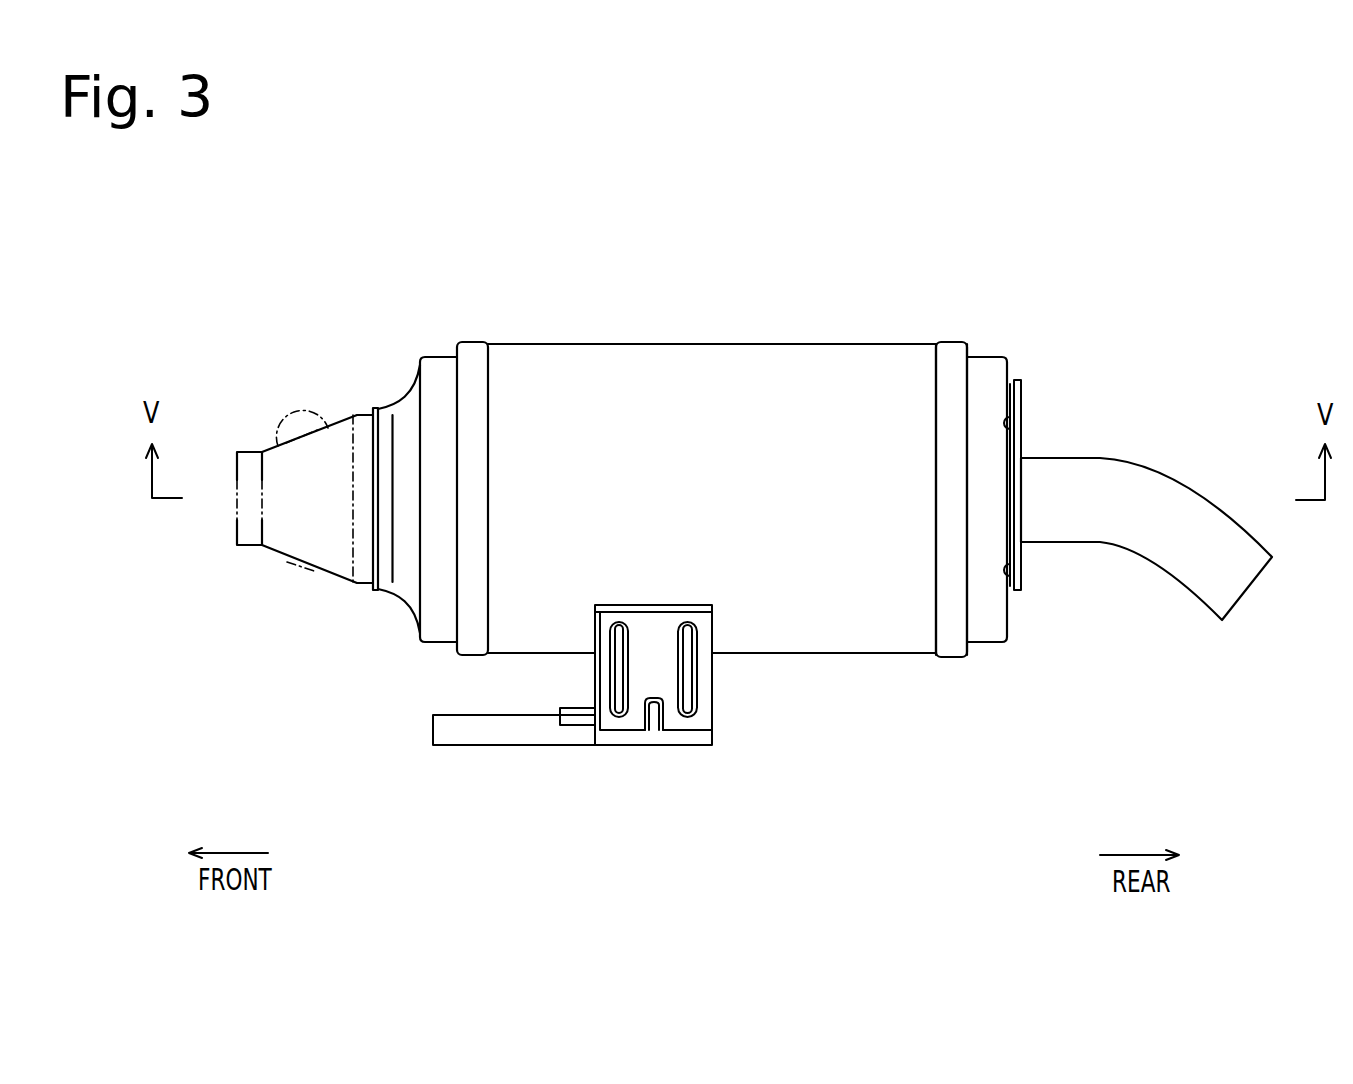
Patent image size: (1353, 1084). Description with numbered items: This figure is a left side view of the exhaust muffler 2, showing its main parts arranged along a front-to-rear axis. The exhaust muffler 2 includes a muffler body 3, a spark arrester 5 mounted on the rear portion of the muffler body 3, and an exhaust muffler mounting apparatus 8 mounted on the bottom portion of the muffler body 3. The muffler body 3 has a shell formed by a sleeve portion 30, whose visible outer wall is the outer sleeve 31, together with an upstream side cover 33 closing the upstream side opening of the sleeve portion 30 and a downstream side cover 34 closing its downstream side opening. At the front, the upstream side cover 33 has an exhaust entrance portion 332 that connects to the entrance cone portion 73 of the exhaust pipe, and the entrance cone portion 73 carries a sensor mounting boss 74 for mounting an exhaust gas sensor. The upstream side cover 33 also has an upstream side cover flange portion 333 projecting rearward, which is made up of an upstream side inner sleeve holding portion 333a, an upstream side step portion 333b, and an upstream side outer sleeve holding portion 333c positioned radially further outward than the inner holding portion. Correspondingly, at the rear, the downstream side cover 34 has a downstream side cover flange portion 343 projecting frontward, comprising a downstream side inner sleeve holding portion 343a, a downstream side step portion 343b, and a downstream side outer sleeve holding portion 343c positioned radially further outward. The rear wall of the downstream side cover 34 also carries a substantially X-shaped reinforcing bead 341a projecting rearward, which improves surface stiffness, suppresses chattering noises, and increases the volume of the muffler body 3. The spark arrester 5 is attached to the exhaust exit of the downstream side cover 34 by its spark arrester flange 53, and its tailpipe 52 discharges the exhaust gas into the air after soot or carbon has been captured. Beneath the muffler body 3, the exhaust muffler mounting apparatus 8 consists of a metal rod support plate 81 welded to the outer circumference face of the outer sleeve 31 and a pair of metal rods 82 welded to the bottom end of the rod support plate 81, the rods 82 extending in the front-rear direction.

The exhaust muffler 2 is at (959, 208).
The muffler body 3 is at (720, 343).
The sleeve portion 30 is at (545, 343).
The outer sleeve 31 is at (712, 498).
The upstream side cover 33 is at (433, 643).
The exhaust entrance portion 332 is at (358, 593).
The upstream side cover flange portion 333 is at (346, 244).
The upstream side inner sleeve holding portion 333a is at (432, 356).
The upstream side step portion 333b is at (453, 354).
The upstream side outer sleeve holding portion 333c is at (477, 340).
The downstream side cover 34 is at (962, 340).
The reinforcing bead 341a is at (1018, 405).
The downstream side cover flange portion 343 is at (1055, 774).
The downstream side inner sleeve holding portion 343a is at (987, 648).
The downstream side step portion 343b is at (972, 650).
The downstream side outer sleeve holding portion 343c is at (948, 658).
The spark arrester 5 is at (1136, 424).
The tailpipe 52 is at (1251, 588).
The spark arrester flange 53 is at (1012, 598).
The exhaust muffler mounting apparatus 8 is at (697, 772).
The rod support plate 81 is at (713, 678).
The rods 82 is at (433, 733).
The entrance cone portion 73 is at (283, 560).
The sensor mounting boss 74 is at (300, 420).